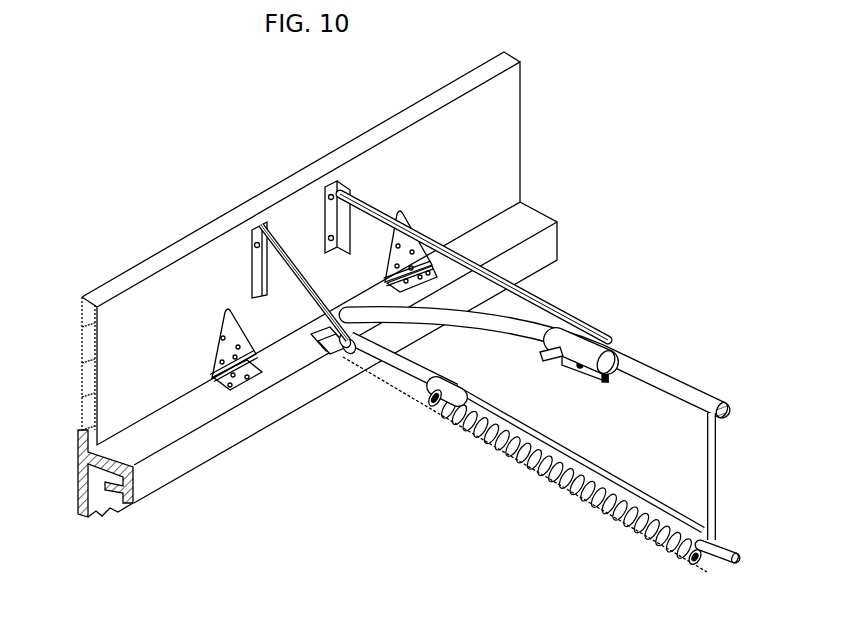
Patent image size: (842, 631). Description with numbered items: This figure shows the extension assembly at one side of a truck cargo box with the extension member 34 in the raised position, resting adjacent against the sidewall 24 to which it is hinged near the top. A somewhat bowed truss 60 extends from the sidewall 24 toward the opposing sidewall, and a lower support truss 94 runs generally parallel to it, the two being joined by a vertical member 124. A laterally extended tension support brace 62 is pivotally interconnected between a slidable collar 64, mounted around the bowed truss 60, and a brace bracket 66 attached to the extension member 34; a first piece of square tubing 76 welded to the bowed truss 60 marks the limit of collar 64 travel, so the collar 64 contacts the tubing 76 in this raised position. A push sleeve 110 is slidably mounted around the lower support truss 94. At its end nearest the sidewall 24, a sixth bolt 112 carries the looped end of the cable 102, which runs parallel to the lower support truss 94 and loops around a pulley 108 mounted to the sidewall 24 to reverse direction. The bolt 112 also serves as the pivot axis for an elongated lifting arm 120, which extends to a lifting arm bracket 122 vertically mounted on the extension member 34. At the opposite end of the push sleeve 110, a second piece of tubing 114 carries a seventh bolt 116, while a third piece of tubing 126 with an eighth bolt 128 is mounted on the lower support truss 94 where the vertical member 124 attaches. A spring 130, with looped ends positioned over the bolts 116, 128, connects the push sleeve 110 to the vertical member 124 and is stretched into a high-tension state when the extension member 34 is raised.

The sidewall 24 is at (77, 452).
The extension member 34 is at (128, 270).
The bowed truss 60 is at (694, 378).
The tension support brace 62 is at (548, 307).
The slidable collar 64 is at (597, 380).
The brace bracket 66 is at (332, 182).
The first piece of elongated square tubing 76 is at (547, 361).
The lower support truss 94 is at (637, 495).
The cable 102 is at (520, 463).
The pulley 108 is at (338, 362).
The push sleeve 110 is at (423, 367).
The sixth bolt 112 is at (349, 360).
The second piece of tubing 114 is at (455, 382).
The seventh bolt 116 is at (433, 404).
The lifting arm 120 is at (304, 302).
The lifting arm bracket 122 is at (260, 230).
The vertical member 124 is at (716, 480).
The third piece of tubing 126 is at (734, 537).
The eighth bolt 128 is at (694, 562).
The spring 130 is at (627, 522).